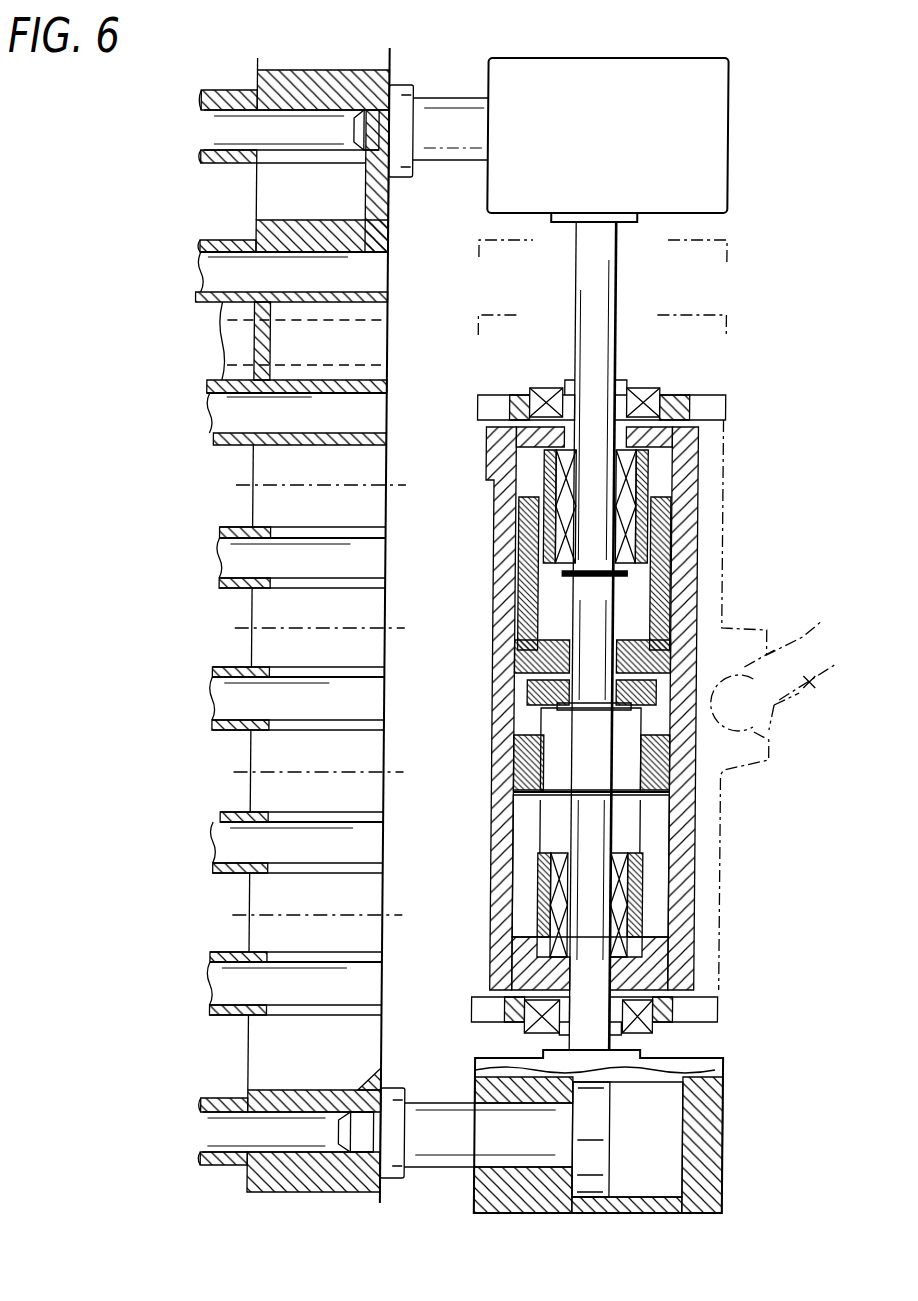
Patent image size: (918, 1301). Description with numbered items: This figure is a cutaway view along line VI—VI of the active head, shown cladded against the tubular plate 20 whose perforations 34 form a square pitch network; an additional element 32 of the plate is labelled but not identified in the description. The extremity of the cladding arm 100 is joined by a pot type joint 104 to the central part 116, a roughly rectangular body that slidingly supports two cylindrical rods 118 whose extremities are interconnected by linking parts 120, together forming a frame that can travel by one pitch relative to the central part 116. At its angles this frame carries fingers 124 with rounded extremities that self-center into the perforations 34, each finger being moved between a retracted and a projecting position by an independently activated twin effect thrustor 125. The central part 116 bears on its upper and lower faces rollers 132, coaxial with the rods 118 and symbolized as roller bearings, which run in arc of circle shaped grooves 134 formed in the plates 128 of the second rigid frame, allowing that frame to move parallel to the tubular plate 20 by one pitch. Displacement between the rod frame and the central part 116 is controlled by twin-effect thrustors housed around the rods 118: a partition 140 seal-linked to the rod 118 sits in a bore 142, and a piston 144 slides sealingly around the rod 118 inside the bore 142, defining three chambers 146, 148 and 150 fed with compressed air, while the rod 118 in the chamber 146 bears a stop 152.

The tubular plate 20 is at (367, 203).
The upper shaft 32 is at (228, 240).
The perforations 34 is at (287, 997).
The cladding arm 100 is at (812, 685).
The pot type joint 104 is at (740, 628).
The central part 116 is at (690, 908).
The cylindrical rods 118 is at (593, 303).
The linking parts 120 is at (672, 42).
The fingers 124 is at (448, 125).
The twin effect thrustor 125 is at (668, 1215).
The plates 128 is at (717, 410).
The rollers 132 is at (640, 392).
The arc of circle shaped grooves 134 is at (540, 392).
The partition 140 is at (518, 740).
The bore 142 is at (655, 822).
The piston 144 is at (518, 550).
The chamber 146 is at (550, 624).
The chamber 148 is at (523, 694).
The chamber 150 is at (637, 838).
The stop 152 is at (560, 585).